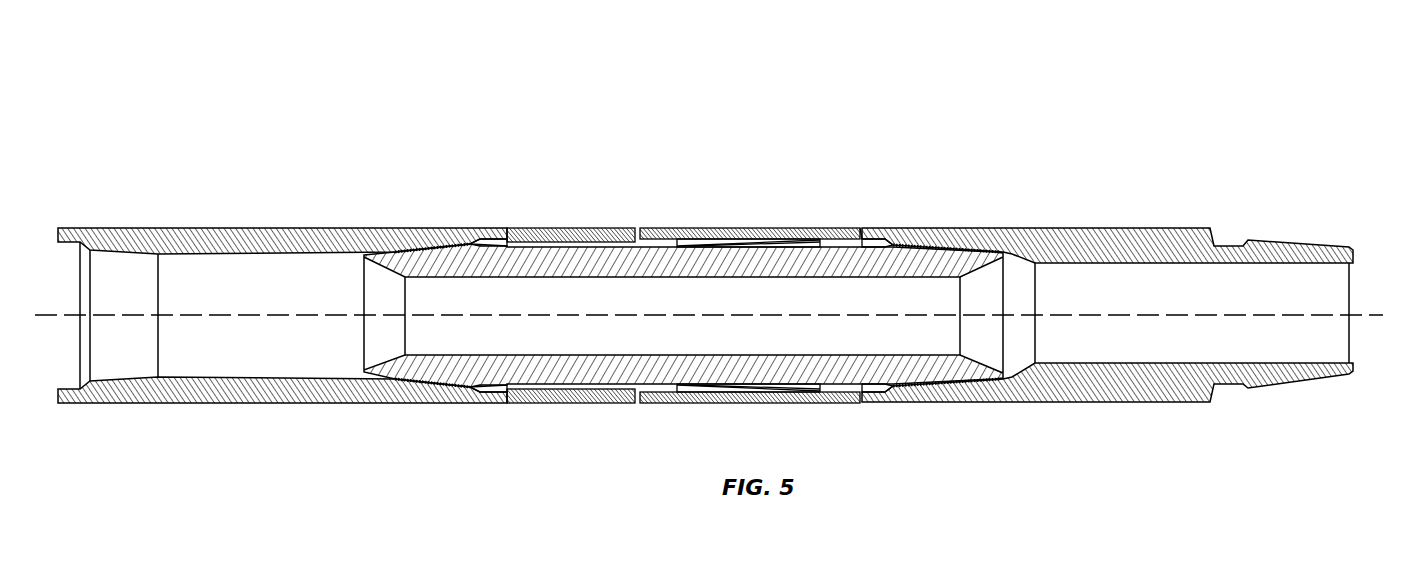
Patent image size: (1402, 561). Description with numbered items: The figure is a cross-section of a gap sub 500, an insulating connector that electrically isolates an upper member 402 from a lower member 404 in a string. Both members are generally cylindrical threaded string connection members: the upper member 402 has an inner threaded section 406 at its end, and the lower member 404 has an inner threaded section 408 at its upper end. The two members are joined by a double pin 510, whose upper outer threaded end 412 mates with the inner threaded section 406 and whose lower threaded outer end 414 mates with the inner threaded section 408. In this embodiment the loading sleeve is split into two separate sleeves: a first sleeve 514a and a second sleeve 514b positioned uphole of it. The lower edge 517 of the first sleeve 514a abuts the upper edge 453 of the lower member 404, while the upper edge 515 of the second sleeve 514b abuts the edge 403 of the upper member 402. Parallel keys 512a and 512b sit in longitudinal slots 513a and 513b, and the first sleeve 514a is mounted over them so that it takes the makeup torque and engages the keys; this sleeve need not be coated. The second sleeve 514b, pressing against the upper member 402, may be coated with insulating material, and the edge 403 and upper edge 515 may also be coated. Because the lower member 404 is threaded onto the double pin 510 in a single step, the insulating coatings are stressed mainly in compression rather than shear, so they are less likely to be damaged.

The gap sub 500 is at (255, 76).
The upper member 402 is at (258, 231).
The edge of the upper threaded connection 403 is at (507, 228).
The lower member 404 is at (1098, 232).
The inner threaded section 406 is at (442, 386).
The inner threaded section 408 is at (920, 385).
The upper outer threaded end 412 is at (455, 383).
The lower threaded outer end 414 is at (962, 375).
The upper edge of the lower threaded connection 453 is at (862, 228).
The double pin 510 is at (610, 363).
The parallel key 512a is at (737, 241).
The parallel key 512b is at (783, 363).
The longitudinal slot 513a is at (808, 247).
The longitudinal slot 513b is at (735, 392).
The first sleeve 514a is at (654, 228).
The second sleeve 514b is at (605, 229).
The upper edge of the second sleeve 515 is at (509, 228).
The lower edge of the first sleeve 517 is at (866, 229).